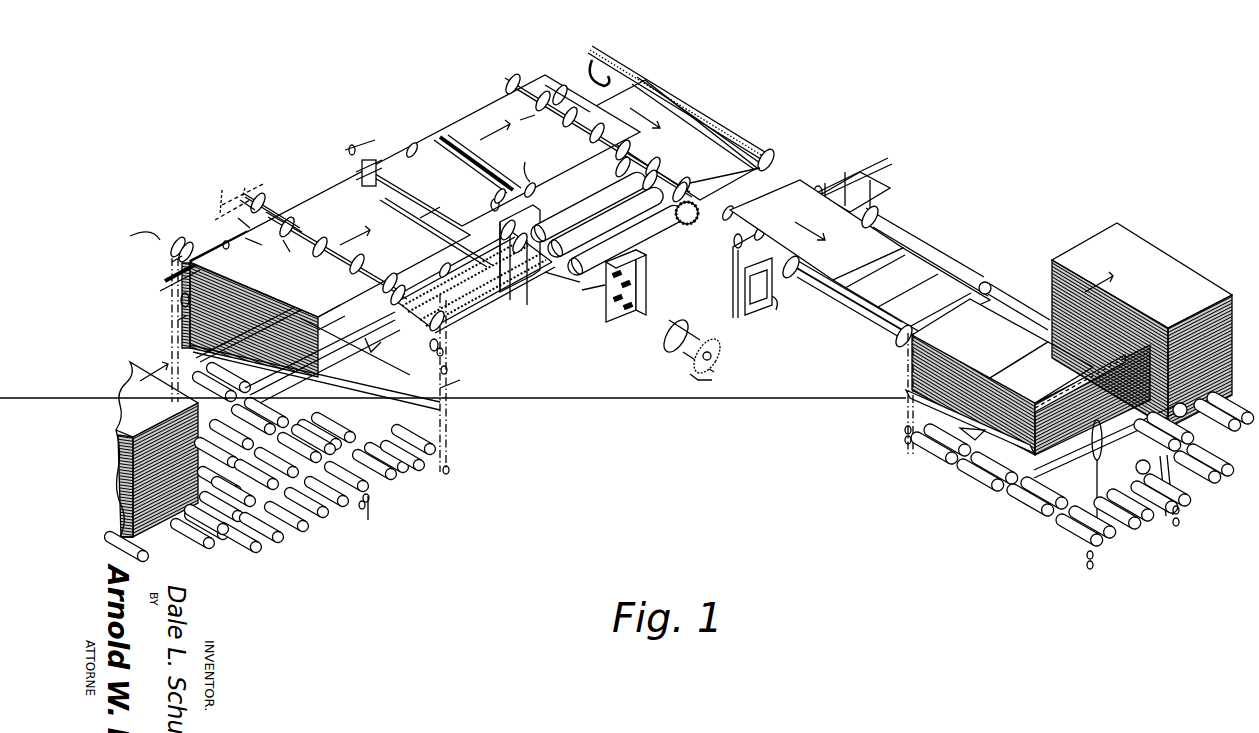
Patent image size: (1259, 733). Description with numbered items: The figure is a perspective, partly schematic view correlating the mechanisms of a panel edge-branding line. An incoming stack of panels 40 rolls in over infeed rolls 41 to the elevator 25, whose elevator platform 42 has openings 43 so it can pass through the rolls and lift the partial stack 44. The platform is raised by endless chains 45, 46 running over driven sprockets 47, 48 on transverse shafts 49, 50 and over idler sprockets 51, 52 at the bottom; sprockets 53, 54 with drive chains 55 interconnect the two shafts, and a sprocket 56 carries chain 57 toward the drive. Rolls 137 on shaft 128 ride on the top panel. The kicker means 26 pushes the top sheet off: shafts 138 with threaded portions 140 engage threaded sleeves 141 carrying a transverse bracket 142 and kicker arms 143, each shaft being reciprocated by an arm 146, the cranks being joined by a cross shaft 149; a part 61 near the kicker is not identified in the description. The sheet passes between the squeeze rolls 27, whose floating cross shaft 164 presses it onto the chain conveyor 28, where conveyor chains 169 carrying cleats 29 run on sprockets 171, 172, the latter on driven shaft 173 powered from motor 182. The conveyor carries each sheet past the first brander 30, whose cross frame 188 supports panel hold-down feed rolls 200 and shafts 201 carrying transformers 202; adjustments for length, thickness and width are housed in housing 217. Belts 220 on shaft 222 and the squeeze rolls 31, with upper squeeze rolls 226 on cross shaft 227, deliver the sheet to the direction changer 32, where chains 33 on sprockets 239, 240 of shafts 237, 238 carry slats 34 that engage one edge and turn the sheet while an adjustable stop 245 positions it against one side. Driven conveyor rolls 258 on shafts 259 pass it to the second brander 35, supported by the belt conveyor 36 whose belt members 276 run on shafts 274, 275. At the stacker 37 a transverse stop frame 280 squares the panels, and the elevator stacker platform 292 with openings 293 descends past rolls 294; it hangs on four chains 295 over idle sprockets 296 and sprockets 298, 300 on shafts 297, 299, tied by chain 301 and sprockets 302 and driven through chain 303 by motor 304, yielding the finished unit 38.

The elevator 25 is at (371, 516).
The kicker means 26 is at (195, 235).
The squeeze rolls 27 is at (298, 197).
The chain conveyor 28 is at (479, 277).
The cleats 29 is at (437, 207).
The first brander 30 is at (397, 135).
The squeeze rolls 31 is at (512, 71).
The direction changer 32 is at (773, 76).
The chain conveyor 33 is at (722, 126).
The slats 34 is at (614, 110).
The second brander 35 is at (932, 193).
The belt conveyor 36 is at (847, 336).
The stacker 37 is at (925, 495).
The unit of stacked branded sheet material 38 is at (1125, 270).
The incoming stack of panels 40 is at (158, 417).
The infeed rolls 41 is at (260, 540).
The elevator platform 42 is at (430, 397).
The openings 43 is at (440, 398).
The partial stack 44 is at (312, 287).
The endless chain 45 is at (174, 333).
The endless chain 46 is at (449, 438).
The driven sprocket 47 is at (170, 260).
The driven sprocket 48 is at (456, 347).
The transverse shaft 49 is at (135, 233).
The transverse shaft 50 is at (395, 282).
The idler sprocket 51 is at (360, 508).
The idler sprocket 52 is at (447, 472).
The sprocket 53 is at (172, 245).
The sprocket 54 is at (248, 203).
The drive chains 55 is at (219, 194).
The sprocket 56 is at (244, 185).
The chain 57 is at (244, 226).
The pivot 61 is at (182, 301).
The shaft 128 is at (288, 250).
The rolls 137 is at (352, 292).
The shafts 138 is at (450, 377).
The threaded portion 140 is at (165, 279).
The threaded sleeve 141 is at (160, 290).
The transverse bracket 142 is at (358, 302).
The kicker arms 143 is at (222, 348).
The arm 146 is at (448, 382).
The cross shaft 149 is at (178, 318).
The cross shaft 164 is at (398, 286).
The conveyor chains 169 is at (441, 270).
The sprocket 171 is at (444, 353).
The sprocket 172 is at (542, 293).
The driven shaft 173 is at (568, 282).
The motor 182 is at (688, 370).
The cross frame 188 is at (352, 145).
The panel hold-down feed rolls 200 is at (396, 152).
The shafts 201 is at (769, 306).
The transformers 202 is at (368, 200).
The housing 217 is at (605, 286).
The belts 220 is at (537, 180).
The shaft 222 is at (615, 158).
The upper squeeze rolls 226 is at (517, 124).
The cross shaft 227 is at (660, 176).
The shaft 237 is at (705, 182).
The shaft 238 is at (560, 93).
The sprockets 239 is at (768, 150).
The sprockets 240 is at (590, 64).
The adjustable stop 245 is at (630, 72).
The driven conveyor rolls 258 is at (816, 185).
The shafts 259 is at (775, 180).
The shaft 274 is at (791, 280).
The shaft 275 is at (900, 348).
The belt members 276 is at (928, 258).
The transverse stop frame 280 is at (1062, 393).
The elevator stacker platform 292 is at (1010, 490).
The openings 293 is at (1028, 510).
The rolls 294 is at (1050, 524).
The chains 295 is at (1085, 555).
The idle sprockets 296 is at (1088, 568).
The longitudinally extending shaft 297 is at (1030, 308).
The sprockets 298 is at (988, 282).
The longitudinally extending shaft 299 is at (968, 366).
The sprockets 300 is at (915, 331).
The chain 301 is at (1076, 382).
The sprockets 302 is at (1110, 538).
The chain 303 is at (1200, 430).
The motor 304 is at (1170, 505).